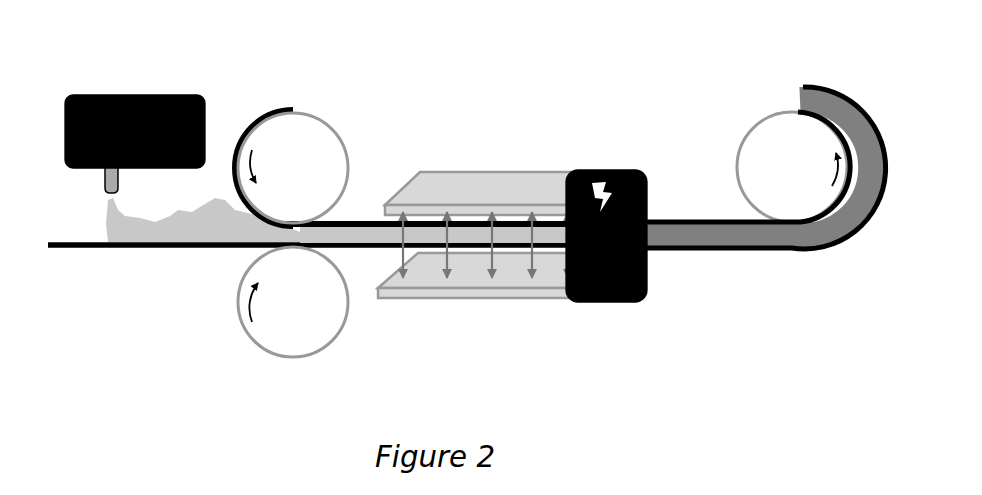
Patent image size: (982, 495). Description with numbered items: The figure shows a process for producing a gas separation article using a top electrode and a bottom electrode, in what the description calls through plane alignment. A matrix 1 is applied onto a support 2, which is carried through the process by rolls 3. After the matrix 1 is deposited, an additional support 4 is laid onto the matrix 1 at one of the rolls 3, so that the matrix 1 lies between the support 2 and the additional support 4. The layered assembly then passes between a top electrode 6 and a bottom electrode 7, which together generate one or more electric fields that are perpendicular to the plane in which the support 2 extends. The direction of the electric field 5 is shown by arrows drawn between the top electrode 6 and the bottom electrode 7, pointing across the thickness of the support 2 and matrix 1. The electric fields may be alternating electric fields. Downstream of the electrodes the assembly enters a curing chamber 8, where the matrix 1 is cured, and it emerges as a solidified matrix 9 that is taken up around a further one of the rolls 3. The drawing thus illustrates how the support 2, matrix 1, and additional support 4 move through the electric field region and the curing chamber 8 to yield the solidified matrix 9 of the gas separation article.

The matrix 1 is at (108, 222).
The support 2 is at (83, 251).
The roll 3 is at (542, 234).
The additional support 4 is at (268, 110).
The direction of the electric field 5 is at (440, 237).
The top electrode 6 is at (488, 192).
The bottom electrode 7 is at (490, 300).
The curing chamber 8 is at (603, 306).
The solidified matrix 9 is at (822, 110).